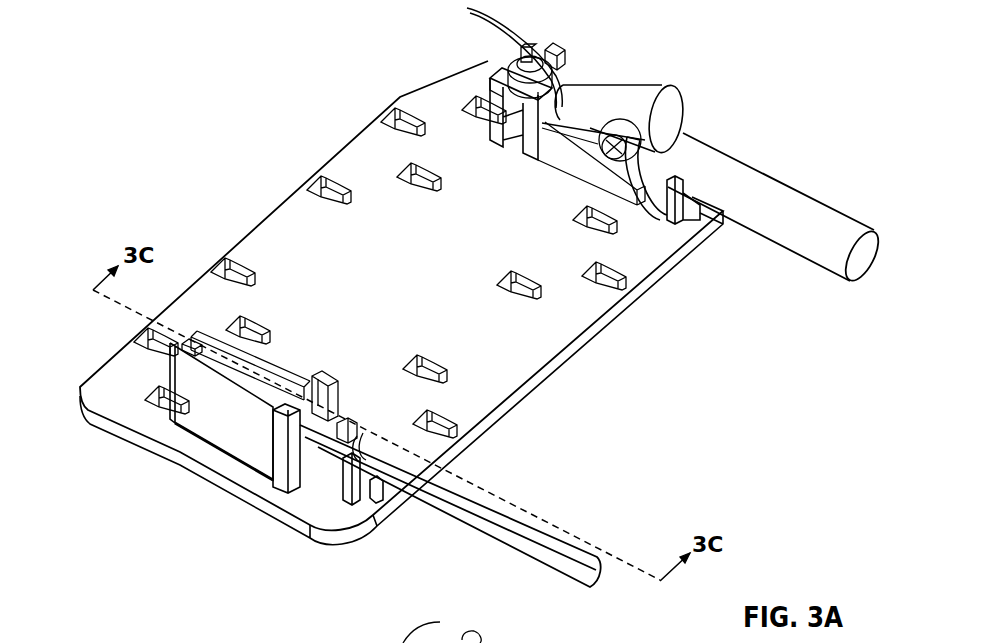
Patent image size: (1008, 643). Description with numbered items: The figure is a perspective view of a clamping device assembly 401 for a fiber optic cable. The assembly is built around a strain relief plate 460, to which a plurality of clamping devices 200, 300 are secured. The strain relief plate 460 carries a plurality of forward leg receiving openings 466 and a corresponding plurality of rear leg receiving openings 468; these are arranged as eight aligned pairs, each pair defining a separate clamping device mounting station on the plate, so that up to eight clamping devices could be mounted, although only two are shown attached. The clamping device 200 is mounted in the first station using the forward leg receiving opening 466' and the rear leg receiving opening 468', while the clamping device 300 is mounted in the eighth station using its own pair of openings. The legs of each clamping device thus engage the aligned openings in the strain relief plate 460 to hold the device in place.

The clamping device 200 is at (228, 410).
The clamping device 300 is at (559, 34).
The clamping device assembly 401 is at (258, 64).
The strain relief plate 460 is at (533, 353).
The forward leg receiving openings 466 is at (545, 364).
The forward leg receiving opening 466' is at (390, 517).
The rear leg receiving openings 468 is at (247, 276).
The rear leg receiving opening 468' is at (144, 451).